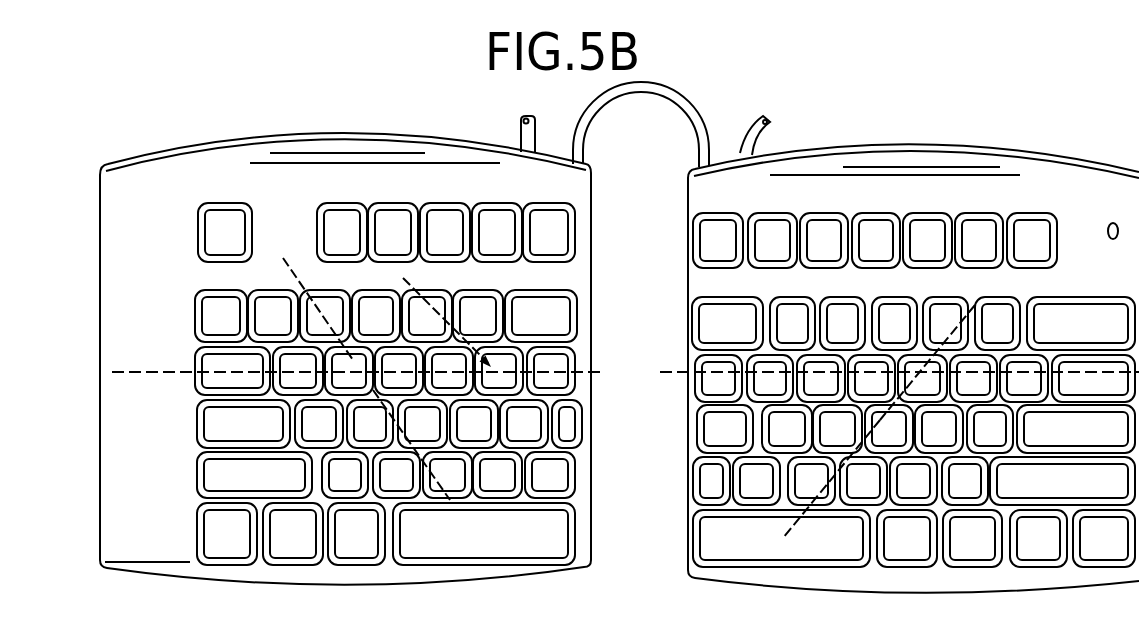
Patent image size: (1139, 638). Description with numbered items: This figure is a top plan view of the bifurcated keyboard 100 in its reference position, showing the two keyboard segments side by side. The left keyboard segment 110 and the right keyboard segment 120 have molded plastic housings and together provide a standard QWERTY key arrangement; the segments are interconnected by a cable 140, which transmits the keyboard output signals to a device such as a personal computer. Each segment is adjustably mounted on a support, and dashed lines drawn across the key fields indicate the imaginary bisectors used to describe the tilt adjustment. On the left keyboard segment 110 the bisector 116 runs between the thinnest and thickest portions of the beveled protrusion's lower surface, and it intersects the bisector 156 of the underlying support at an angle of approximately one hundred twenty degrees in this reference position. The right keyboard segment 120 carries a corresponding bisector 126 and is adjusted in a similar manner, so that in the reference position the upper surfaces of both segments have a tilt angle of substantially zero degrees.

The bifurcated keyboard 100 is at (1002, 136).
The left keyboard segment 110 is at (348, 135).
The right keyboard segment 120 is at (920, 144).
The cable 140 is at (677, 88).
The imaginary bisector 116 is at (217, 372).
The bisector 126 is at (1072, 380).
The imaginary bisector 156 is at (487, 545).